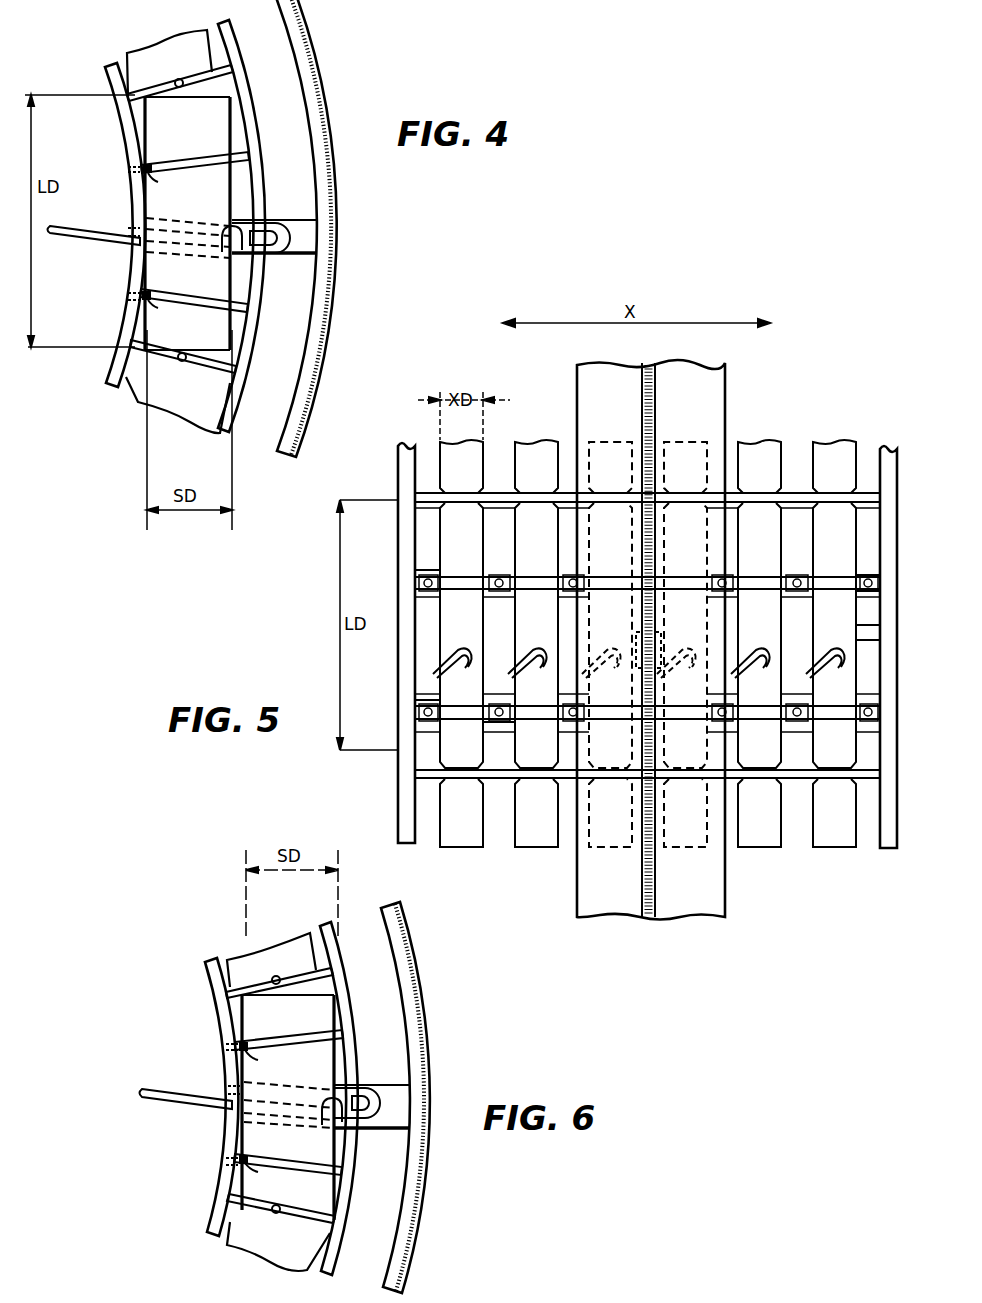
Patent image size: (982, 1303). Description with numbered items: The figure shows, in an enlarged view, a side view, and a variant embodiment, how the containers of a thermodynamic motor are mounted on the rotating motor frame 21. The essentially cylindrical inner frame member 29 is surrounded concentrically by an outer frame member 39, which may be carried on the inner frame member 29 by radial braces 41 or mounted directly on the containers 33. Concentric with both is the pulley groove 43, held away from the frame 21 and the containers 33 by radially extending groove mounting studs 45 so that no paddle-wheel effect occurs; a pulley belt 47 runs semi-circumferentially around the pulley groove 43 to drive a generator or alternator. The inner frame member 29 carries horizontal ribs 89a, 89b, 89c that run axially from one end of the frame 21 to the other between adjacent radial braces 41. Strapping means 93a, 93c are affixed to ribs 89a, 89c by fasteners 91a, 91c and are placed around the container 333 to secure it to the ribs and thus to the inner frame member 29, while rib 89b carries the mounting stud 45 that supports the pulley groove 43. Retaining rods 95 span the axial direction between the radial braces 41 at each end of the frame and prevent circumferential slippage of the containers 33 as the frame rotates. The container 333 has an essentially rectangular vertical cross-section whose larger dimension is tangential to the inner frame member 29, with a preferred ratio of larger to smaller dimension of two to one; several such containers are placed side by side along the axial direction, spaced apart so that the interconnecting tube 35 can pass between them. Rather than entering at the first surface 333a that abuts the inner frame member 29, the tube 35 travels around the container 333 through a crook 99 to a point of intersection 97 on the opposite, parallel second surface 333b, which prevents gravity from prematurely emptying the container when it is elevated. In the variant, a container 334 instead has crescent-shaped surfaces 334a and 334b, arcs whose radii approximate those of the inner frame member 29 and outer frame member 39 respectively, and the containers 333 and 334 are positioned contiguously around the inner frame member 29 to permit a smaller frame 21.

In FIG. 4, the motor frame 21 is at (350, 42).
In FIG. 5, the motor frame 21 is at (838, 386).
In FIG. 6, the motor frame 21 is at (472, 997).
In FIG. 4, the inner frame member 29 is at (122, 340).
In FIG. 6, the inner frame member 29 is at (216, 1220).
In FIG. 5, the containers 33 is at (470, 458).
In FIG. 4, the interconnecting tube 35 is at (55, 238).
In FIG. 5, the interconnecting tube 35 is at (455, 645).
In FIG. 6, the interconnecting tube 35 is at (160, 1086).
In FIG. 4, the outer frame member 39 is at (238, 384).
In FIG. 5, the outer frame member 39 is at (398, 676).
In FIG. 6, the outer frame member 39 is at (340, 1200).
In FIG. 4, the radial braces 41 is at (218, 77).
In FIG. 6, the radial braces 41 is at (290, 975).
In FIG. 4, the pulley groove 43 is at (316, 100).
In FIG. 5, the pulley groove 43 is at (616, 913).
In FIG. 6, the pulley groove 43 is at (410, 1028).
In FIG. 4, the groove mounting studs 45 is at (300, 248).
In FIG. 5, the groove mounting studs 45 is at (656, 640).
In FIG. 6, the groove mounting studs 45 is at (390, 1122).
In FIG. 5, the pulley belt 47 is at (656, 893).
In FIG. 4, the horizontal rib 89a is at (140, 168).
In FIG. 5, the horizontal rib 89a is at (872, 572).
In FIG. 6, the horizontal rib 89a is at (238, 1047).
In FIG. 4, the horizontal rib 89b is at (140, 218).
In FIG. 5, the horizontal rib 89b is at (872, 636).
In FIG. 6, the horizontal rib 89b is at (236, 1090).
In FIG. 4, the horizontal rib 89c is at (140, 297).
In FIG. 5, the horizontal rib 89c is at (508, 722).
In FIG. 6, the horizontal rib 89c is at (238, 1160).
In FIG. 4, the fastener 91a is at (151, 174).
In FIG. 5, the fastener 91a is at (425, 580).
In FIG. 6, the fastener 91a is at (248, 1052).
In FIG. 4, the fastener 91c is at (150, 304).
In FIG. 5, the fastener 91c is at (425, 712).
In FIG. 6, the fastener 91c is at (248, 1165).
In FIG. 4, the strapping means 93a is at (193, 170).
In FIG. 5, the strapping means 93a is at (460, 575).
In FIG. 6, the strapping means 93a is at (300, 1040).
In FIG. 4, the strapping means 93c is at (186, 294).
In FIG. 5, the strapping means 93c is at (462, 720).
In FIG. 6, the strapping means 93c is at (300, 1165).
In FIG. 4, the retaining rods 95 is at (177, 80).
In FIG. 5, the retaining rods 95 is at (420, 497).
In FIG. 6, the retaining rods 95 is at (278, 945).
In FIG. 4, the point of intersection 97 is at (221, 252).
In FIG. 5, the point of intersection 97 is at (500, 682).
In FIG. 6, the point of intersection 97 is at (332, 1095).
In FIG. 4, the crook 99 is at (280, 222).
In FIG. 6, the crook 99 is at (368, 1087).
In FIG. 4, the container 333 is at (228, 135).
In FIG. 4, the first surface 333a is at (178, 140).
In FIG. 4, the second surface 333b is at (235, 182).
In FIG. 6, the container 334 is at (320, 992).
In FIG. 6, the crescent-shaped surface 334a is at (240, 1030).
In FIG. 6, the crescent-shaped surface 334b is at (325, 1225).